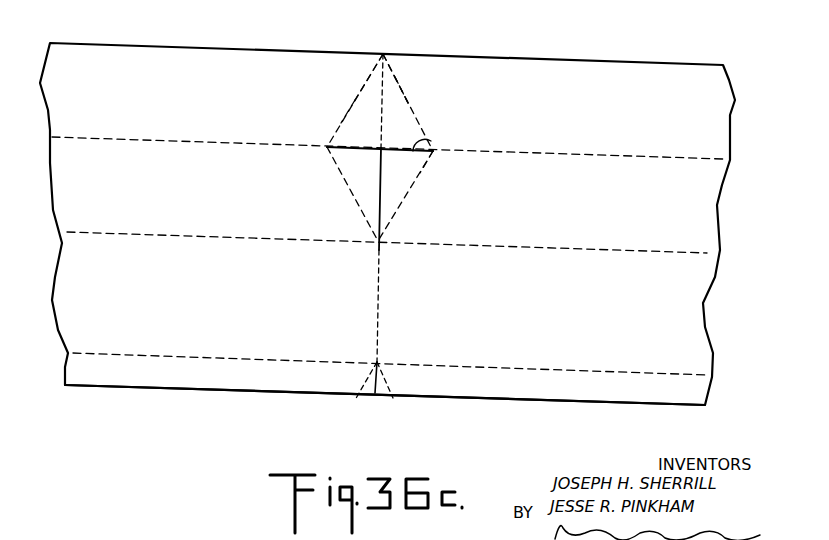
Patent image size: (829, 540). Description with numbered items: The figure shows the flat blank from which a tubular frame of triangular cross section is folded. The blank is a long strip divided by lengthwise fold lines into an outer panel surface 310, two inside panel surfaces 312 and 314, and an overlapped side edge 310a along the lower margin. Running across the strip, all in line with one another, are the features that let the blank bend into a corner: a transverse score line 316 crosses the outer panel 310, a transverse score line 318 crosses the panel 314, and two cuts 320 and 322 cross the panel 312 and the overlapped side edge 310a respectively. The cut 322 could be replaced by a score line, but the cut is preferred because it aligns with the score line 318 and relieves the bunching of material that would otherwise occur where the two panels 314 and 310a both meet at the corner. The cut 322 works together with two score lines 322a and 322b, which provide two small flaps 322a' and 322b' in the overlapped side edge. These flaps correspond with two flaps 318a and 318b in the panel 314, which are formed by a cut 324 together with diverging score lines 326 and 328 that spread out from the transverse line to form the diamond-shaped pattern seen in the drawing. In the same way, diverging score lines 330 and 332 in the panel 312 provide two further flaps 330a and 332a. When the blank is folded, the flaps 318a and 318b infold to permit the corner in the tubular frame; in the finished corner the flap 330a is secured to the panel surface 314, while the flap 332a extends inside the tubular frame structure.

The outer panel surface 310 is at (687, 317).
The overlapped side edge 310a is at (650, 394).
The inside panel surface 312 is at (702, 213).
The inside panel surface 314 is at (732, 116).
The transverse score line 316 is at (380, 282).
The transverse score line 318 is at (385, 92).
The flap 318a is at (402, 115).
The flap 318b is at (361, 99).
The cut 320 is at (381, 192).
The cut 322 is at (378, 393).
The score line 322a is at (421, 366).
The flap 322a' is at (430, 383).
The score line 322b is at (341, 362).
The flap 322b' is at (343, 421).
The cut 324 is at (423, 138).
The diverging score line 326 is at (405, 95).
The diverging score line 328 is at (352, 105).
The diverging score line 330 is at (395, 215).
The flap 330a is at (413, 162).
The diverging score line 332 is at (350, 193).
The flap 332a is at (330, 153).